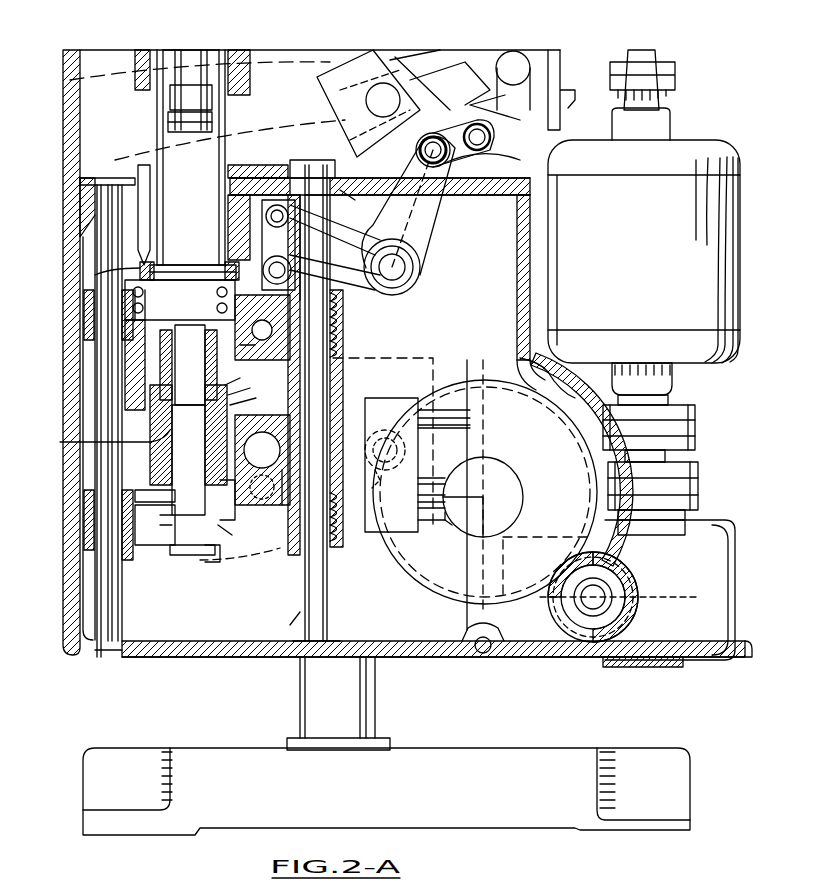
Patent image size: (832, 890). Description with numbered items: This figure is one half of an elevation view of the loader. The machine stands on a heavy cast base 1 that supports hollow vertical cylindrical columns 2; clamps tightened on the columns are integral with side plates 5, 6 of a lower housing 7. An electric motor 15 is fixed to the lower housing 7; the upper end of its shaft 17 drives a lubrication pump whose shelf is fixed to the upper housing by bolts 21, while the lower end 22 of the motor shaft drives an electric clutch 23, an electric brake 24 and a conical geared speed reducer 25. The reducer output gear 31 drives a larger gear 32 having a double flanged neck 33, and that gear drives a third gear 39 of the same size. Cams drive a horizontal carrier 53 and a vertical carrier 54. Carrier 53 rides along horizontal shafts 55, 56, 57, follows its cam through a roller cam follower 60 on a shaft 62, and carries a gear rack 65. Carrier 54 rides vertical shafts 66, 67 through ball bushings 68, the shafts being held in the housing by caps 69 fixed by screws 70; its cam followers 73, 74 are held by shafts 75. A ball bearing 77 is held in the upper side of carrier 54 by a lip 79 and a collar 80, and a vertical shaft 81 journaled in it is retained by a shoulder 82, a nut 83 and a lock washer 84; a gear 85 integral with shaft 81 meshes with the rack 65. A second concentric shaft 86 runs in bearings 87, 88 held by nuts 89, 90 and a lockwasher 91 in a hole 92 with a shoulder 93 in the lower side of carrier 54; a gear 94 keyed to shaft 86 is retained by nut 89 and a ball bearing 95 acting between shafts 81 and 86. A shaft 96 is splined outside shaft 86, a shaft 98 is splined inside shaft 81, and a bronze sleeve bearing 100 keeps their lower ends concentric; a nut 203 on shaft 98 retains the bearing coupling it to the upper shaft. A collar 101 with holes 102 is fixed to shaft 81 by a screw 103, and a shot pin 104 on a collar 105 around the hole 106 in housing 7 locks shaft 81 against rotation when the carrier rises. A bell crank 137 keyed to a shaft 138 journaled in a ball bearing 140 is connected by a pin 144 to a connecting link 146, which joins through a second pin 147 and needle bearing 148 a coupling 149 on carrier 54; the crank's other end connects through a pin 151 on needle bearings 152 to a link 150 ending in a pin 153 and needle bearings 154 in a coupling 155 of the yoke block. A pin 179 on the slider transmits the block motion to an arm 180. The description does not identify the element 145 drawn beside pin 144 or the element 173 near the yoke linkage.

The base 1 is at (618, 755).
The columns 2 is at (378, 712).
The side plate 5 is at (22, 356).
The side plate 6 is at (583, 268).
The lower housing 7 is at (760, 68).
The electric motor 15 is at (642, 268).
The motor shaft 17 is at (660, 108).
The bolts 21 is at (544, 90).
The lower end of motor shaft 22 is at (655, 400).
The electric clutch 23 is at (695, 425).
The electric brake 24 is at (698, 490).
The conical geared speed reducer 25 is at (712, 520).
The gear 31 is at (630, 582).
The larger gear 32 is at (425, 597).
The double flanged neck 33 is at (452, 540).
The third gear 39 is at (248, 572).
The horizontal carrier 53 is at (392, 398).
The vertical carrier 54 is at (343, 330).
The horizontal shaft 55 is at (458, 410).
The horizontal shaft 56 is at (448, 485).
The horizontal shaft 57 is at (436, 520).
The roller type cam follower 60 is at (383, 486).
The shaft 62 is at (385, 438).
The gear rack 65 is at (262, 460).
The rod 66 is at (118, 618).
The vertical shaft 67 is at (306, 619).
The ball bushings 68 is at (85, 295).
The caps 69 is at (95, 178).
The screws 70 is at (88, 660).
The cam follower 73 is at (286, 487).
The cam follower 74 is at (252, 352).
The shafts 75 is at (270, 422).
The ball bearing 77 is at (262, 324).
The lip 79 is at (236, 286).
The collar 80 is at (110, 269).
The vertical shaft 81 is at (142, 365).
The shoulder 82 is at (180, 307).
The nut 83 is at (140, 270).
The lock washer 84 is at (248, 258).
The gear 85 is at (245, 374).
The second vertical shaft 86 is at (168, 125).
The bearing 87 is at (225, 525).
The bearing 88 is at (234, 537).
The nut 89 is at (170, 484).
The nut 90 is at (178, 555).
The lockwasher 91 is at (217, 566).
The hole 92 is at (155, 498).
The shoulder 93 is at (166, 522).
The gear 94 is at (254, 394).
The ball bearing 95 is at (104, 441).
The shaft 96 is at (190, 365).
The shaft 98 is at (160, 370).
The bronze sleeve bearing 100 is at (256, 384).
The collar 101 is at (280, 200).
The holes 102 is at (160, 228).
The screw 103 is at (256, 200).
The shot pin 104 is at (148, 165).
The collar 105 is at (135, 178).
The hole 106 is at (290, 178).
The bell crank 137 is at (440, 222).
The shaft 138 is at (400, 294).
The ball bearing 140 is at (413, 270).
The pin 144 is at (361, 190).
The flange 145 is at (300, 175).
The connecting link 146 is at (281, 245).
The second pin 147 is at (330, 228).
The needle bearing 148 is at (335, 212).
The coupling 149 is at (380, 262).
The link 150 is at (462, 152).
The pin 151 is at (433, 163).
The needle bearings 152 is at (416, 154).
The pin 153 is at (480, 150).
The needle bearings 154 is at (497, 115).
The coupling 155 is at (504, 106).
The block 173 is at (440, 80).
The pin 179 is at (375, 112).
The arm 180 is at (207, 111).
The nut 203 is at (244, 56).